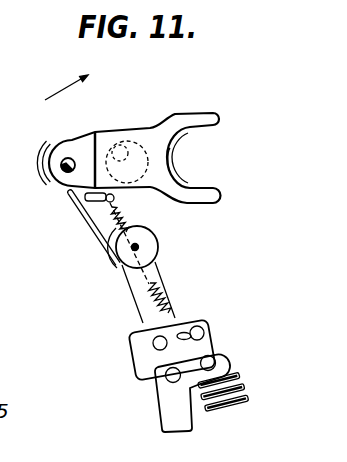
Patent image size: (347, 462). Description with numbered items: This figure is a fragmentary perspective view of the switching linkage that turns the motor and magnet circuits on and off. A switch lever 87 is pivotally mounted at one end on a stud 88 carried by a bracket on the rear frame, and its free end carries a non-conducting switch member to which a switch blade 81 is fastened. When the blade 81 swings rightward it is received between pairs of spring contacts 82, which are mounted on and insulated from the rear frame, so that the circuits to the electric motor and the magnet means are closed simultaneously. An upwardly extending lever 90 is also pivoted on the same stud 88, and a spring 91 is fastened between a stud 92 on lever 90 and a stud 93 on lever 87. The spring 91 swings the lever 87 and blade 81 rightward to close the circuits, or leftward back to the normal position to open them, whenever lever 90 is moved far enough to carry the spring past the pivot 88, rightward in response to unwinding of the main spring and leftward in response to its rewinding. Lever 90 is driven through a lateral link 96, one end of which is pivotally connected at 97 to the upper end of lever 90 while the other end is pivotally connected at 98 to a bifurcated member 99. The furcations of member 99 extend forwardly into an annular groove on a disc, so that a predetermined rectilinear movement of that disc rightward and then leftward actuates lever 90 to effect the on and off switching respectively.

The lateral link 96 is at (83, 138).
The pivotal connection 98 is at (128, 140).
The pivotal connection 97 is at (62, 167).
The bifurcated member 99 is at (171, 160).
The stud 92 is at (73, 197).
The upwardly extending lever 90 is at (98, 224).
The stud 88 is at (158, 244).
The switch lever 87 is at (141, 306).
The spring 91 is at (166, 298).
The stud 93 is at (200, 337).
The switch blade 81 is at (165, 412).
The spring contacts 82 is at (213, 416).